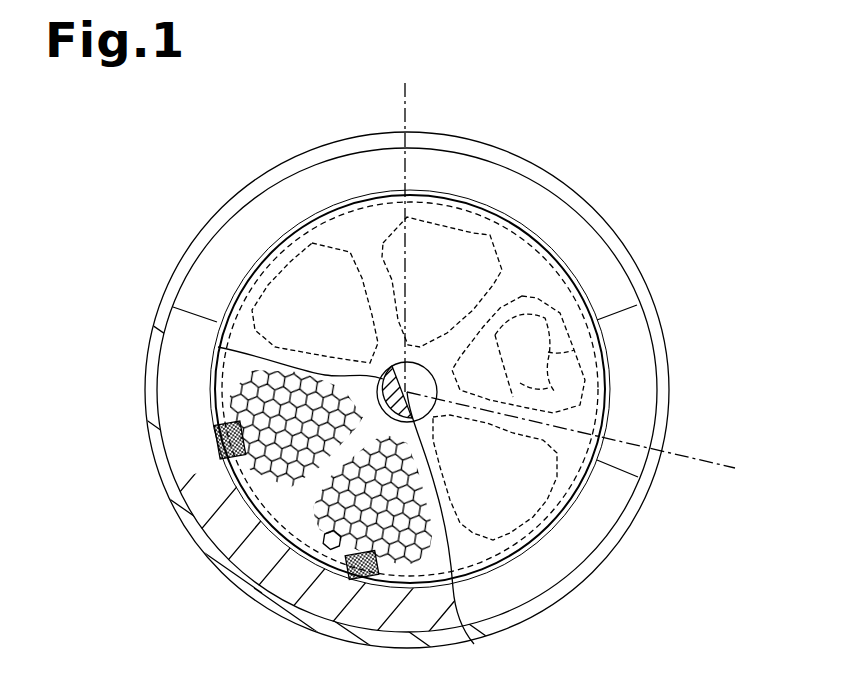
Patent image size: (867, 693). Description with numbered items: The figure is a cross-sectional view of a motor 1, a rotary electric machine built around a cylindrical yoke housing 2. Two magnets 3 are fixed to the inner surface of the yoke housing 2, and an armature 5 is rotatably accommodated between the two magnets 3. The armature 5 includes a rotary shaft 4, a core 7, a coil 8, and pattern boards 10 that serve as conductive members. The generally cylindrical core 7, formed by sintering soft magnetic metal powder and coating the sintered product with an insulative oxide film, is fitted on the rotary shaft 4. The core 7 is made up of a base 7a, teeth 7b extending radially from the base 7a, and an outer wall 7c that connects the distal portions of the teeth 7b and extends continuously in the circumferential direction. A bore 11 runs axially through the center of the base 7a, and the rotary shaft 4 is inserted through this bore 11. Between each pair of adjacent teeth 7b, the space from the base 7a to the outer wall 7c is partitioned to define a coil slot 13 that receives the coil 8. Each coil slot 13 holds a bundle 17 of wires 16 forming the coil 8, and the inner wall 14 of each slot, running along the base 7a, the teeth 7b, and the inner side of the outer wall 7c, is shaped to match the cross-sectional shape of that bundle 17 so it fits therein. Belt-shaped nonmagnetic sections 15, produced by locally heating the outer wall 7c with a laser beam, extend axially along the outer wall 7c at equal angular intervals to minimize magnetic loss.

The motor 1 is at (645, 128).
The yoke housing 2 is at (418, 87).
The magnets 3 is at (637, 305).
The rotary shaft 4 is at (418, 373).
The armature 5 is at (196, 367).
The core 7 is at (217, 390).
The base 7a is at (493, 366).
The teeth 7b is at (525, 353).
The outer wall 7c is at (590, 358).
The coil 8 is at (417, 485).
The pattern boards 10 is at (283, 235).
The bore 11 is at (396, 362).
The coil slot 13 is at (601, 413).
The inner wall 14 is at (547, 355).
The nonmagnetic sections 15 is at (217, 435).
The wires 16 is at (324, 538).
The bundle 17 is at (426, 500).